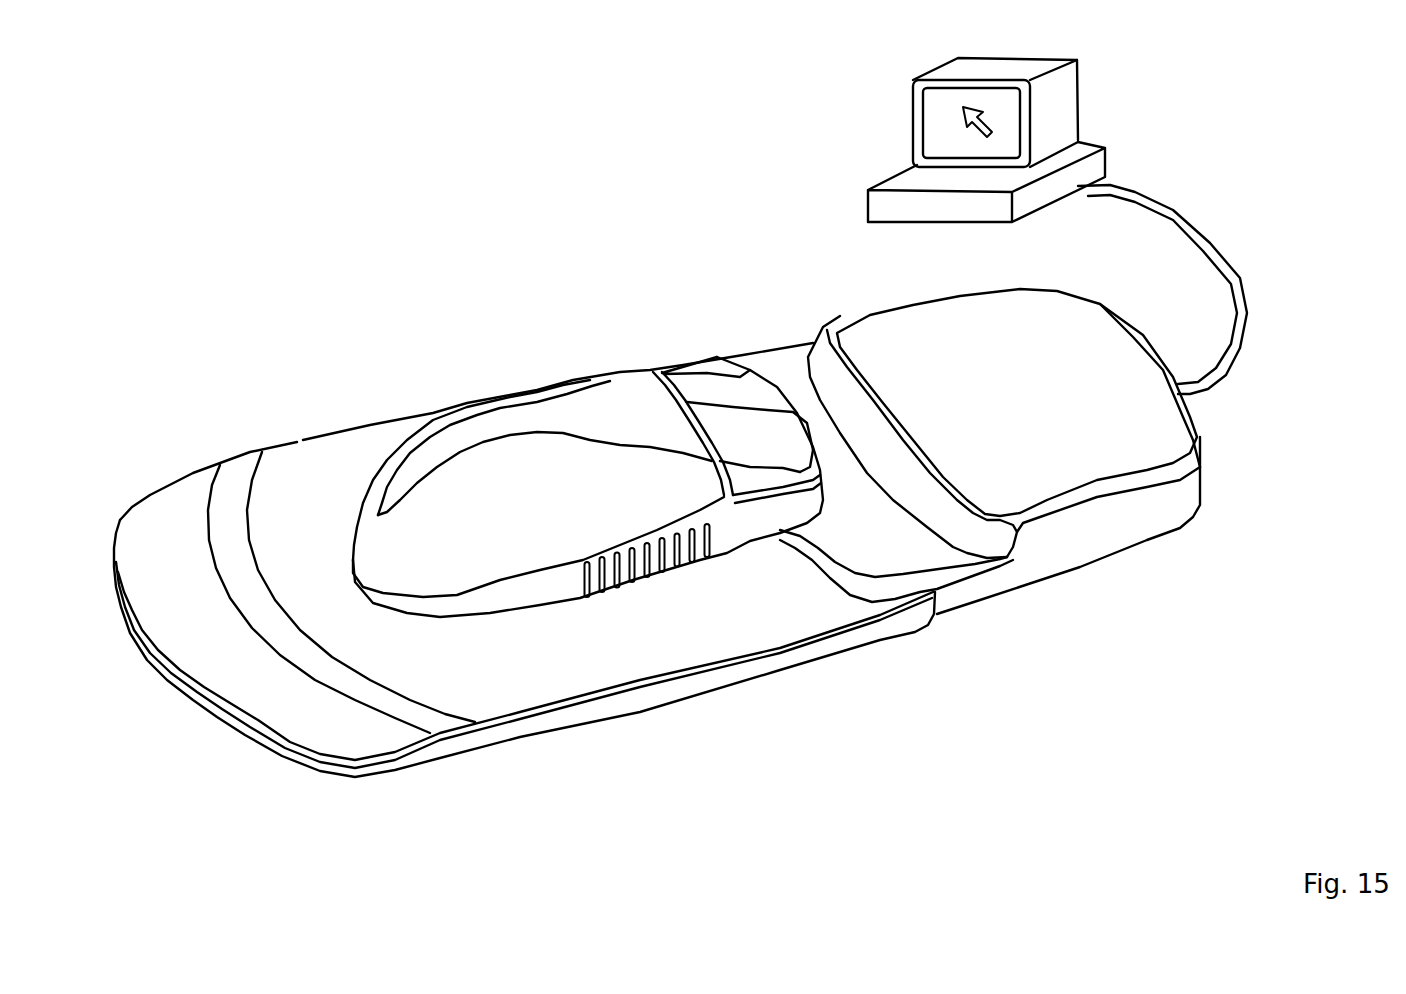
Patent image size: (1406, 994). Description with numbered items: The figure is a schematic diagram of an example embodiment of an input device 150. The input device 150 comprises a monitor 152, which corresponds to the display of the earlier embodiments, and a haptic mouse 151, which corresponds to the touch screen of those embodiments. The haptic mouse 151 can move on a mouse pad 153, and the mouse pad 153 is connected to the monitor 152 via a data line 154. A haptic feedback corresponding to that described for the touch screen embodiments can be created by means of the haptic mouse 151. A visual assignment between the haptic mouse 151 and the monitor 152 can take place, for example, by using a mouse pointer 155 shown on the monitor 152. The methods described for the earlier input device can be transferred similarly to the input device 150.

The input device 150 is at (680, 457).
The haptic mouse 151 is at (621, 411).
The monitor 152 is at (941, 138).
The mouse pad 153 is at (566, 675).
The data line 154 is at (1173, 217).
The mouse pointer 155 is at (968, 112).